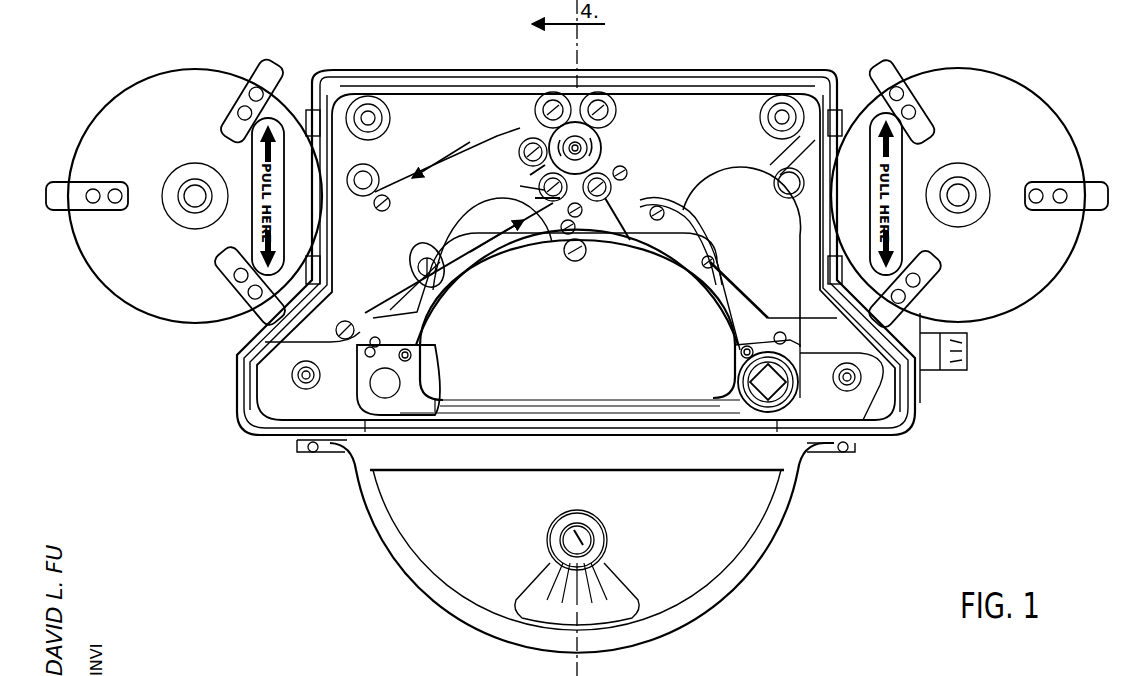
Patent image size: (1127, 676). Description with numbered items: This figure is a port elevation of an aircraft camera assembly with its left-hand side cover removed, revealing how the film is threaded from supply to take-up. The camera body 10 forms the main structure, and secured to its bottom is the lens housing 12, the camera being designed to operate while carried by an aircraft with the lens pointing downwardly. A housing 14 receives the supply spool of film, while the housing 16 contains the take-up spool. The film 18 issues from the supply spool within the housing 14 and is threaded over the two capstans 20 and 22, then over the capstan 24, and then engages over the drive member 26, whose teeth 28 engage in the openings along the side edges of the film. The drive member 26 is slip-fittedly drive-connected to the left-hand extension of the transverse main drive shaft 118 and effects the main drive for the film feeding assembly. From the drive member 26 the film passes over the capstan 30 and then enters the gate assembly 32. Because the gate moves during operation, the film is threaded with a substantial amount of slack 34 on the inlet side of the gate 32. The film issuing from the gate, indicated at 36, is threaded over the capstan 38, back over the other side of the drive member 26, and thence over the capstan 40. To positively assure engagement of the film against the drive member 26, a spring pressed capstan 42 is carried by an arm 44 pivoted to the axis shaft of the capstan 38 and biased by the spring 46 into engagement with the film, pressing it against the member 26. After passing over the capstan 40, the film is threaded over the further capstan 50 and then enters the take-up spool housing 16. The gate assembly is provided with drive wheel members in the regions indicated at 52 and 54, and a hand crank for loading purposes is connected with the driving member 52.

The camera body 10 is at (742, 66).
The lens housing 12 is at (796, 520).
The supply spool housing 14 is at (980, 66).
The take-up spool housing 16 is at (217, 68).
The film 18 is at (783, 150).
The capstan 20 is at (788, 195).
The capstan 22 is at (790, 106).
The capstan 24 is at (600, 100).
The drive member 26 is at (606, 142).
The teeth 28 is at (604, 152).
The capstan 30 is at (612, 190).
The gate assembly 32 is at (740, 302).
The slack 34 is at (742, 178).
The film issuing from gate 36 is at (385, 290).
The capstan 38 is at (519, 181).
The capstan 40 is at (552, 100).
The spring pressed capstan 42 is at (528, 142).
The arm 44 is at (542, 185).
The spring 46 is at (497, 136).
The further capstan 50 is at (372, 180).
The driving member 52 is at (806, 378).
The drive wheel member 54 is at (356, 405).
The main drive shaft 118 is at (580, 146).